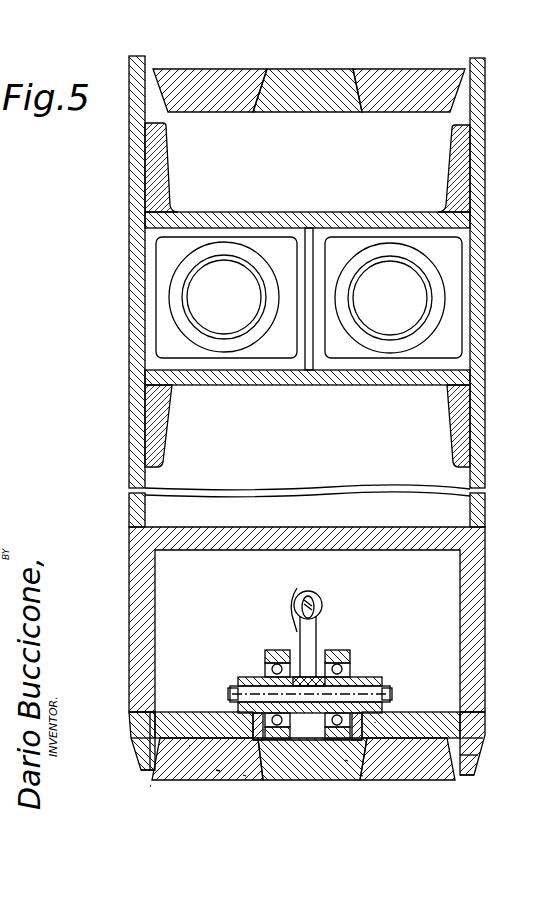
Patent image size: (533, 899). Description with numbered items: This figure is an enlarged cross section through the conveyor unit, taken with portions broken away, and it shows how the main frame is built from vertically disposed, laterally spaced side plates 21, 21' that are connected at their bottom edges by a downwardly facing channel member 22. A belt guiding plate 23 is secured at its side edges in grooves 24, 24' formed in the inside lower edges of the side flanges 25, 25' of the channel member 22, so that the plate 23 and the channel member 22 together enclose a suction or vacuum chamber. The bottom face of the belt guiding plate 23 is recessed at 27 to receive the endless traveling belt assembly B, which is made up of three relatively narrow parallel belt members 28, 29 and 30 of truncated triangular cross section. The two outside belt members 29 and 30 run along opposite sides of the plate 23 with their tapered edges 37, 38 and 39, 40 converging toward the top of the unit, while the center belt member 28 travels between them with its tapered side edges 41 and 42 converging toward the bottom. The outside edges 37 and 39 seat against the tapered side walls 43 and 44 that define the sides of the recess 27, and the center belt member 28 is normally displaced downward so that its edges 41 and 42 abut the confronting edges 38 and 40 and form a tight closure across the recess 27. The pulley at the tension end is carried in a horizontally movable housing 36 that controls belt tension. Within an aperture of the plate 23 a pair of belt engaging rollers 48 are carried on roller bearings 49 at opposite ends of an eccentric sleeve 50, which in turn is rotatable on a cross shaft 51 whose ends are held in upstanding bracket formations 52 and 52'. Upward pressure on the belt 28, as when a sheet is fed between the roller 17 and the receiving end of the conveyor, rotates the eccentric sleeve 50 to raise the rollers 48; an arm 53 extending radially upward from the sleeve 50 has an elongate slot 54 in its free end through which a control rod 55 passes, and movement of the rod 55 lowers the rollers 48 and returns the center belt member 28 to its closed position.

The roller 17 is at (375, 722).
The side plate 21 is at (322, 291).
The side plate 21' is at (276, 295).
The channel member 22 is at (480, 593).
The belt guiding plate 23 is at (425, 718).
The groove 24 is at (492, 733).
The groove 24' is at (120, 730).
The side flange 25 is at (486, 787).
The side flange 25' is at (122, 773).
The guide recess 27 is at (191, 745).
The center belt member 28 is at (300, 78).
The outside belt member 29 is at (194, 78).
The outside belt member 30 is at (395, 78).
The horizontally movable housing 36 is at (462, 274).
The tapered edge 37 is at (143, 752).
The tapered edge 38 is at (218, 770).
The tapered edge 39 is at (470, 762).
The tapered edge 40 is at (345, 760).
The tapered side edge 41 is at (243, 776).
The tapered side edge 42 is at (361, 776).
The tapered side wall 43 is at (152, 742).
The tapered side wall 44 is at (468, 744).
The belt engaging roller 48 is at (280, 650).
The roller bearing 49 is at (275, 665).
The eccentric sleeve 50 is at (306, 675).
The cross shaft 51 is at (388, 692).
The upstanding bracket formation 52 is at (322, 677).
The upstanding bracket formation 52' is at (285, 666).
The arm 53 is at (292, 625).
The elongate slot 54 is at (318, 612).
The control rod 55 is at (312, 600).
The belt assembly B is at (150, 791).